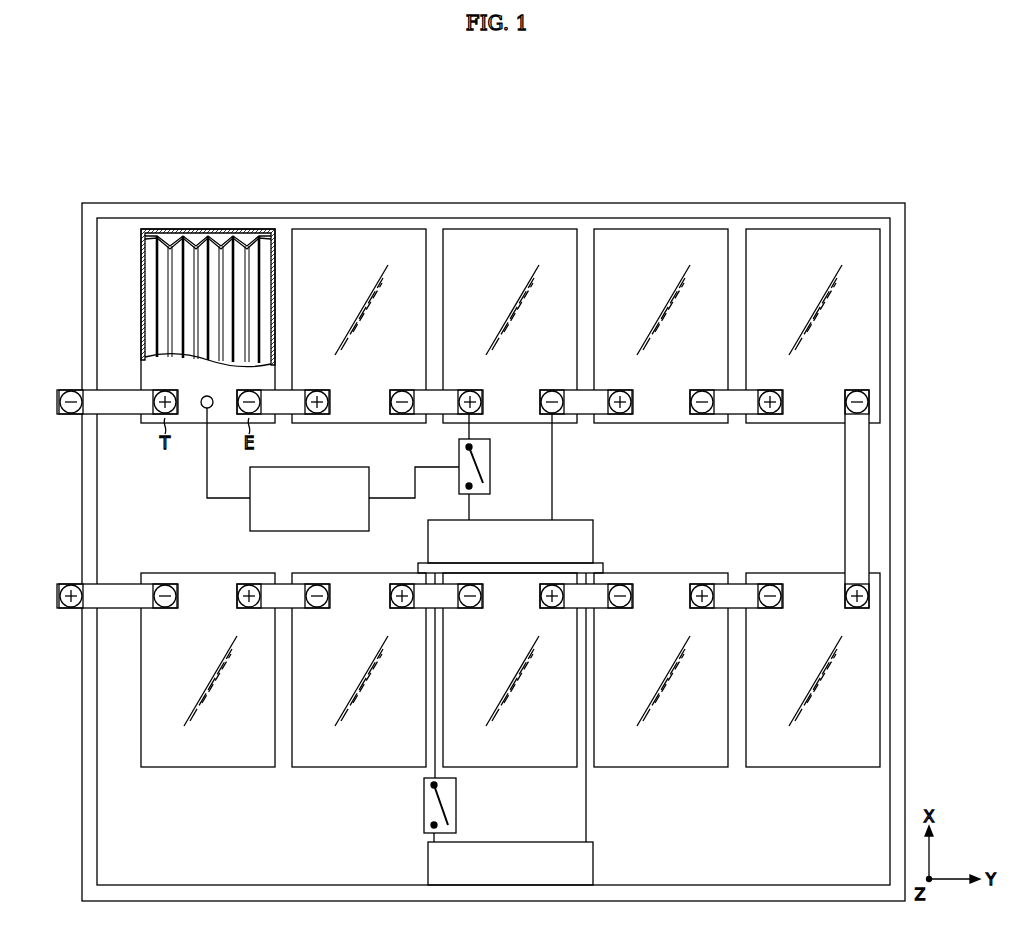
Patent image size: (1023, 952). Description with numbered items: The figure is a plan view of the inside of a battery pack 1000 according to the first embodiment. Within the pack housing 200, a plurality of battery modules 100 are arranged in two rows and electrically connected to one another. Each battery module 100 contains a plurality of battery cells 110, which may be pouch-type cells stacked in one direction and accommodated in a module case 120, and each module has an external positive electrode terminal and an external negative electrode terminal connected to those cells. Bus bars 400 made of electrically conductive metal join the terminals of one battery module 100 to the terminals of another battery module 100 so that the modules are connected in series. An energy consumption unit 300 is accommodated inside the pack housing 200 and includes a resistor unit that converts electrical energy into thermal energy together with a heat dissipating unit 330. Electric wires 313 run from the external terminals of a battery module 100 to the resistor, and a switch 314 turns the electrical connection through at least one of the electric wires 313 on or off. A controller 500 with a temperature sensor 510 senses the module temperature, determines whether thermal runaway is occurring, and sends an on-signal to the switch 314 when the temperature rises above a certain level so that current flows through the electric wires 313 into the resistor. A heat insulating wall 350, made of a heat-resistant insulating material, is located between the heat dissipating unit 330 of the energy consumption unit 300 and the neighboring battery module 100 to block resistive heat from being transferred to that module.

The battery pack 1000 is at (464, 529).
The pack housing 200 is at (716, 203).
The battery module 100 is at (130, 314).
The battery cell 110 is at (153, 277).
The module case 120 is at (141, 245).
The bus bar 400 is at (432, 390).
The temperature sensor 510 is at (207, 396).
The controller 500 is at (310, 467).
The electric wire 313 is at (468, 432).
The switch 314 is at (490, 468).
The energy consumption unit 300 is at (521, 692).
The heat dissipating unit 330 is at (593, 543).
The heat insulating wall 350 is at (419, 566).